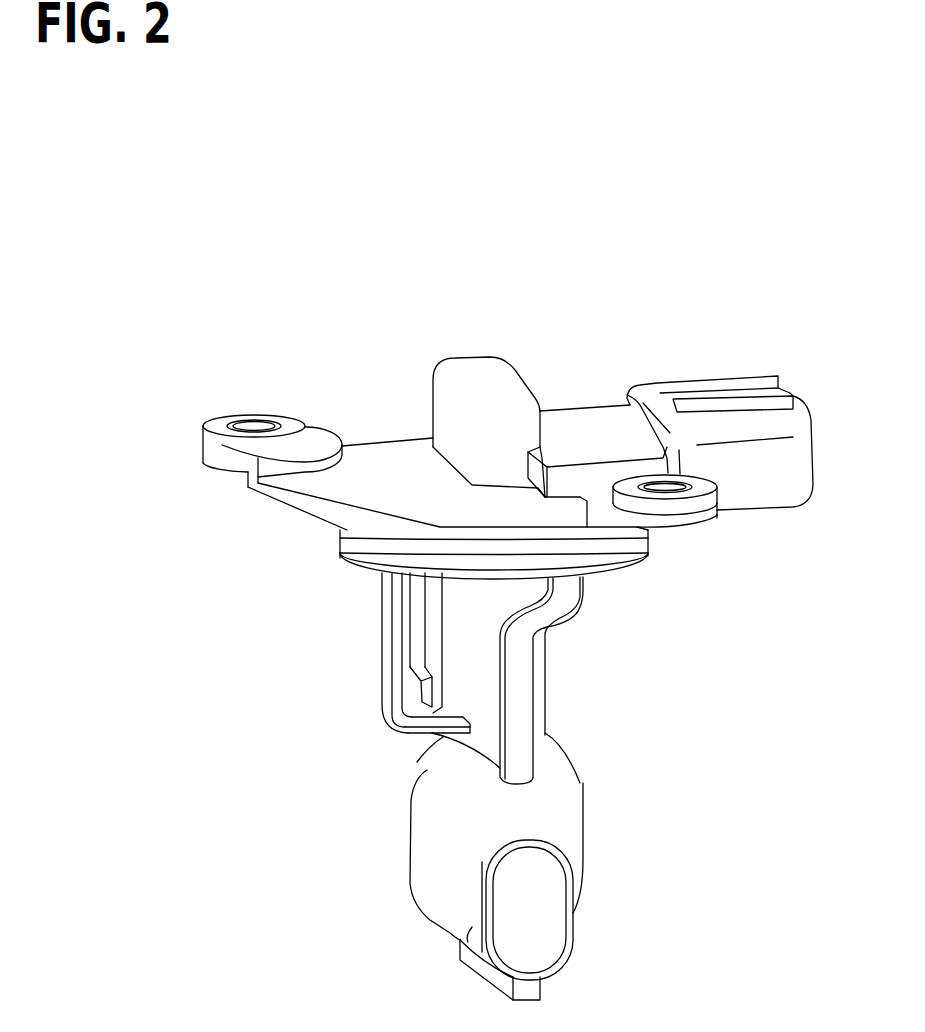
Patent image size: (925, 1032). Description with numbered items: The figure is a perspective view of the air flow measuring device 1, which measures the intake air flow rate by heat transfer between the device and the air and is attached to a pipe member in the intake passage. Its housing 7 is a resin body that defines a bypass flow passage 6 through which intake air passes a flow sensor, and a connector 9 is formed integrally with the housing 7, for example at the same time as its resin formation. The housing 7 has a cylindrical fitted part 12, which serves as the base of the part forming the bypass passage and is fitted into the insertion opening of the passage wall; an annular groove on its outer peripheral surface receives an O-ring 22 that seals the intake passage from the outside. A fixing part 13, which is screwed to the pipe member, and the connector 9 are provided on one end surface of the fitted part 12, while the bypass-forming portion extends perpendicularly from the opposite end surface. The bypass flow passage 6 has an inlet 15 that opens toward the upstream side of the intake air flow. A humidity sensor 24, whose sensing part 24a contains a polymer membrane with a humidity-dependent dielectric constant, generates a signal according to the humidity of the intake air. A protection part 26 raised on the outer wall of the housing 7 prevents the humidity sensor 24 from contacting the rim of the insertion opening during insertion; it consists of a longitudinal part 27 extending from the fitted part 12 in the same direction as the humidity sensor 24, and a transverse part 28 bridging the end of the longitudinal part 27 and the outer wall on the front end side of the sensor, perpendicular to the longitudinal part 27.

The air flow measuring device 1 is at (237, 314).
The bypass flow passage 6 is at (582, 907).
The housing 7 is at (395, 913).
The connector 9 is at (721, 372).
The fitted part 12 is at (612, 564).
The fixing part 13 is at (381, 457).
The inlet 15 is at (550, 888).
The O-ring 22 is at (373, 560).
The humidity sensor 24 is at (432, 657).
The sensing part 24a is at (427, 687).
The protection part 26 is at (362, 691).
The longitudinal part 27 is at (397, 613).
The transverse part 28 is at (413, 783).